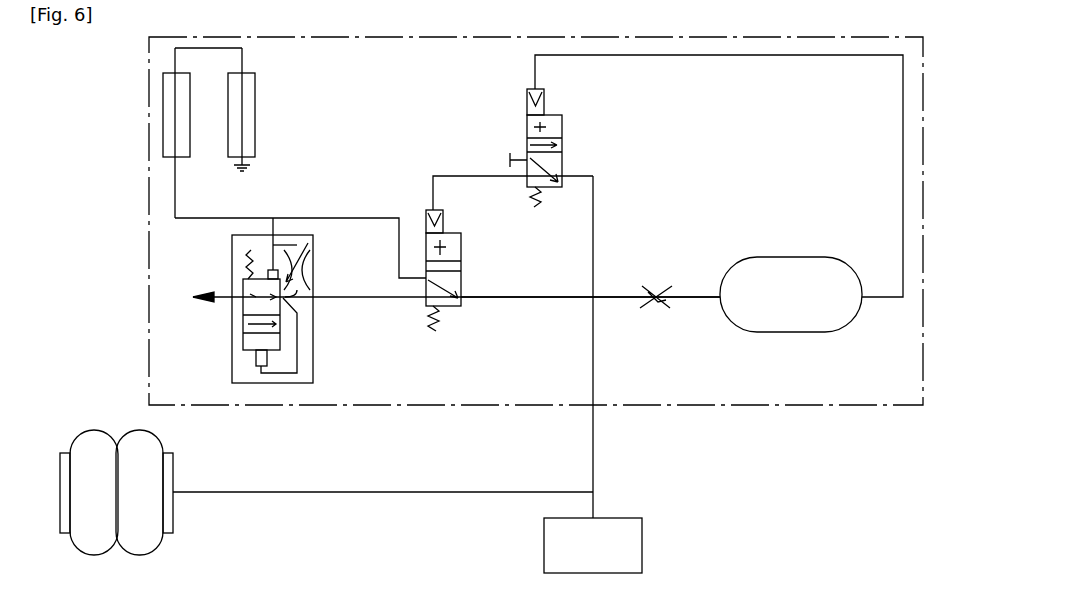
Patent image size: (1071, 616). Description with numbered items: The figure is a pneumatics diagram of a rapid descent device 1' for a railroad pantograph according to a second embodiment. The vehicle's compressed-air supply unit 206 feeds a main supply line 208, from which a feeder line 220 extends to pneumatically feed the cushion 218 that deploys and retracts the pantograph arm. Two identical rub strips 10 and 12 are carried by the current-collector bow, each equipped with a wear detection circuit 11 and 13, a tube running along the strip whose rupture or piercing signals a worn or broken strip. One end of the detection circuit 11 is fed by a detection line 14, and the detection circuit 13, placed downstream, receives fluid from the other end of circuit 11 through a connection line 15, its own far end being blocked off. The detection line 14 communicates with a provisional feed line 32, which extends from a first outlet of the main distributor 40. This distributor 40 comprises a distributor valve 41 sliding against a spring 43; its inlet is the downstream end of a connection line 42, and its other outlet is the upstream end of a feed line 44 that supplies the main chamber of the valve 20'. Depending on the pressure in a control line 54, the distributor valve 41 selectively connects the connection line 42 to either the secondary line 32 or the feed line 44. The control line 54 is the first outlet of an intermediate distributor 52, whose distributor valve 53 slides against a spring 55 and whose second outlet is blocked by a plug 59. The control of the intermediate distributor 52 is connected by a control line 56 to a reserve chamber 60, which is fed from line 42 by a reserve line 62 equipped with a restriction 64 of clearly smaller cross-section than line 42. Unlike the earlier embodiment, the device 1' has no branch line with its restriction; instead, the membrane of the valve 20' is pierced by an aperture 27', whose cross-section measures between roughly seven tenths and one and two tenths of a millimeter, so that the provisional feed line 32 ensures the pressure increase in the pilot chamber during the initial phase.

The rapid descent device 1' is at (479, 221).
The rub strip 10 is at (163, 120).
The wear detection circuit 11 is at (163, 150).
The rub strip 12 is at (255, 80).
The wear detection circuit 13 is at (242, 106).
The detection line 14 is at (175, 178).
The connection line 15 is at (206, 50).
The valve 20' is at (332, 303).
The aperture 27' is at (307, 224).
The provisional feed line 32 is at (340, 218).
The main distributor 40 is at (492, 279).
The distributor valve 41 is at (462, 246).
The connection line 42 is at (520, 299).
The spring 43 is at (428, 327).
The feed line 44 is at (345, 300).
The intermediate distributor 52 is at (505, 125).
The distributor valve 53 is at (565, 122).
The control line 54 is at (455, 176).
The spring 55 is at (542, 210).
The control line 56 is at (693, 57).
The plug 59 is at (518, 142).
The reserve chamber 60 is at (791, 294).
The reserve line 62 is at (693, 300).
The restriction 64 is at (654, 292).
The supply unit 206 is at (593, 545).
The supply line 208 is at (598, 510).
The cushion 218 is at (165, 553).
The feeder line 220 is at (354, 494).